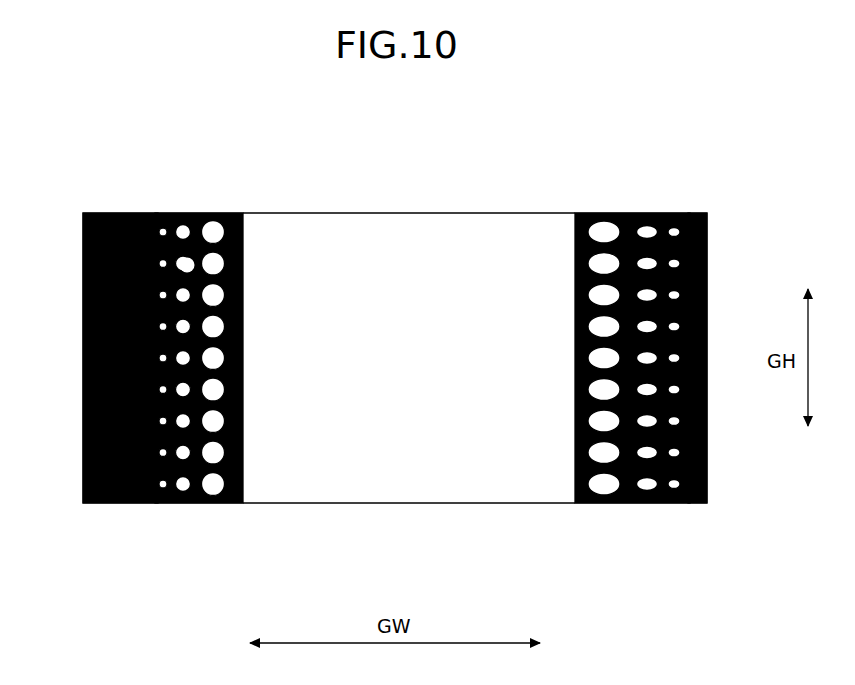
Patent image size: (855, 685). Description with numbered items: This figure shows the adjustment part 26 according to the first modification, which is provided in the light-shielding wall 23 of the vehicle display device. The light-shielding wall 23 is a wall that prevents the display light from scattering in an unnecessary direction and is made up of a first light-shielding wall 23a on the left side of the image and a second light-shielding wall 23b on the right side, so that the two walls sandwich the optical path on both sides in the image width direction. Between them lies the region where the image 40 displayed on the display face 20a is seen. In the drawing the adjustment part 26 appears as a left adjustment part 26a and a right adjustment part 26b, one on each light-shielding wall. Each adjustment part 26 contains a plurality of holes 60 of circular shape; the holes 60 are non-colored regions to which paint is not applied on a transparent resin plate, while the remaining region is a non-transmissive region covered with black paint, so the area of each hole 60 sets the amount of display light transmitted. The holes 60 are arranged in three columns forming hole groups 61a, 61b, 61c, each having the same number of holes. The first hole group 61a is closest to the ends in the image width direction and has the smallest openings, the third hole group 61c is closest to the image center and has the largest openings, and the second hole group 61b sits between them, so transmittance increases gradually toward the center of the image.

The light-shielding wall 23 is at (76, 196).
The first light-shielding wall 23a is at (104, 203).
The second light-shielding wall 23b is at (699, 205).
The adjustment part 26 is at (422, 333).
The adjustment part 26a is at (243, 207).
The adjustment part 26b is at (680, 207).
The image 40 is at (303, 300).
The display face 20a is at (355, 273).
The hole 60 is at (183, 297).
The first hole group 61a is at (159, 510).
The second hole group 61b is at (181, 510).
The third hole group 61c is at (213, 510).